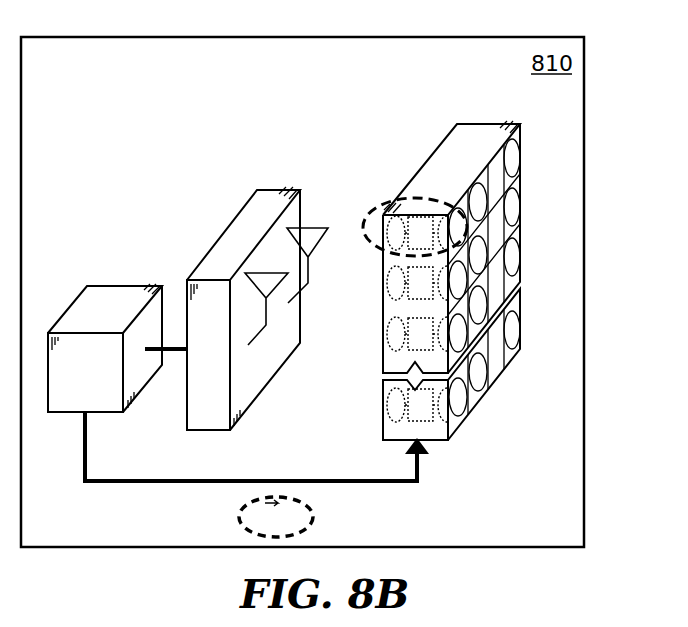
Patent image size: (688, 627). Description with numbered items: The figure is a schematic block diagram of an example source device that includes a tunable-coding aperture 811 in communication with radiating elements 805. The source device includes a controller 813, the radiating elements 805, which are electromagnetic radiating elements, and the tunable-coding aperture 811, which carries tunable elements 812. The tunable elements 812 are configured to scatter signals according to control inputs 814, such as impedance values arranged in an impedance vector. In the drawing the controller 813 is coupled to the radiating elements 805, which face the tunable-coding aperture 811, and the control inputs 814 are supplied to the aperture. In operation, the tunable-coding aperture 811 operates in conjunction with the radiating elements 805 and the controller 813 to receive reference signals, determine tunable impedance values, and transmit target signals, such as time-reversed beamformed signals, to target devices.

The radiating elements 805 is at (266, 200).
The tunable-coding aperture 811 is at (463, 147).
The tunable elements 812 is at (382, 212).
The controller 813 is at (104, 300).
The control input(s) 814 is at (315, 508).